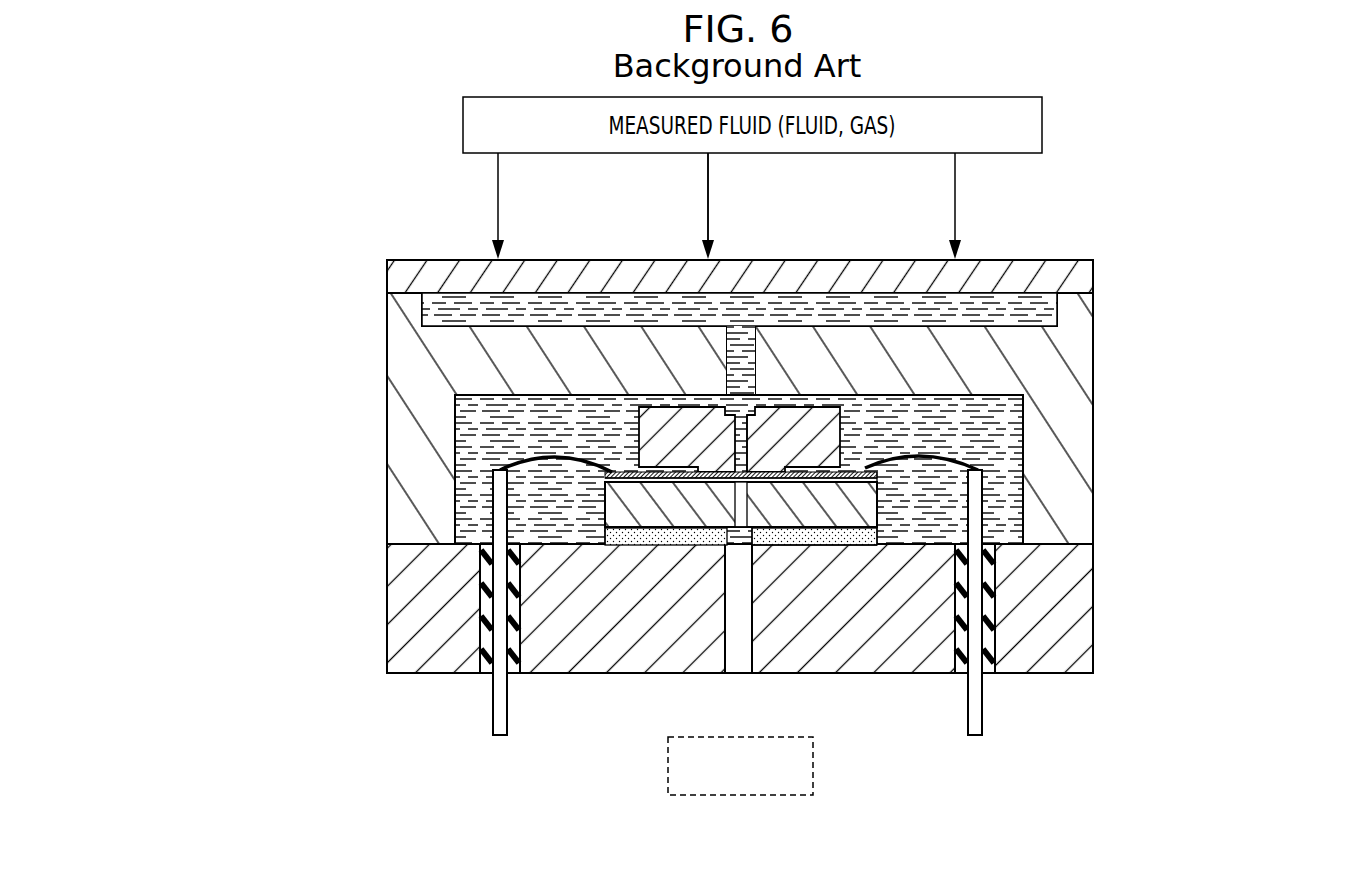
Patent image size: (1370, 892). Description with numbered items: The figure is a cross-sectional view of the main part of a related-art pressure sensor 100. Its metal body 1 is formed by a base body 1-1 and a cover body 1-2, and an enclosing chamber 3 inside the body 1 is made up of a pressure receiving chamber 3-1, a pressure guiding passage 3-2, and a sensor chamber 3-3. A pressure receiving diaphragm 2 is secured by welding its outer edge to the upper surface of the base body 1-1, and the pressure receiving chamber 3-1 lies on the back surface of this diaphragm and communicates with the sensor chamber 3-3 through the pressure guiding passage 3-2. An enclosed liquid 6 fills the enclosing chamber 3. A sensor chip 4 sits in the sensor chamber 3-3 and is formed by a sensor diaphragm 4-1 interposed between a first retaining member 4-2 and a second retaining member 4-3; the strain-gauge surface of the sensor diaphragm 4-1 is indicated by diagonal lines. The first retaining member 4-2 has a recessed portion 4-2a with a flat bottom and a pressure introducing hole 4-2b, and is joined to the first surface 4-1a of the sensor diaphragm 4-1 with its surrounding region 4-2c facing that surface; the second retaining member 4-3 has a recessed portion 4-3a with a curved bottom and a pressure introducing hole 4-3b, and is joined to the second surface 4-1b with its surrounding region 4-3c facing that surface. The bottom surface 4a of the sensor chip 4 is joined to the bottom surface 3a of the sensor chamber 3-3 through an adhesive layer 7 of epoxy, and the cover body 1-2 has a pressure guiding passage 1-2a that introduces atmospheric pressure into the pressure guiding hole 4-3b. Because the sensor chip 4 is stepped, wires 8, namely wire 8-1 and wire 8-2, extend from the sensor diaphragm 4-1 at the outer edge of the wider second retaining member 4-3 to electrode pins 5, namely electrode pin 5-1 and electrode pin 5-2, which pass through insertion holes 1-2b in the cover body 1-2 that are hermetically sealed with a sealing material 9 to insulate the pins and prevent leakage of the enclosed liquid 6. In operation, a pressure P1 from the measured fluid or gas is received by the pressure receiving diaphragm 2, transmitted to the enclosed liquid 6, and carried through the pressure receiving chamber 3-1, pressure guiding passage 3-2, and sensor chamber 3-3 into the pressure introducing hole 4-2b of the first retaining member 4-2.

The pressure sensor 100 is at (1092, 177).
The body 1 is at (291, 395).
The base body 1-1 is at (416, 400).
The cover body 1-2 is at (416, 584).
The pressure guiding passage 1-2a is at (738, 625).
The insertion holes 1-2b is at (482, 620).
The pressure receiving diaphragm 2 is at (1078, 272).
The enclosing chamber 3 is at (1215, 318).
The pressure receiving chamber 3-1 is at (1058, 304).
The pressure guiding passage 3-2 is at (758, 362).
The sensor chamber 3-3 is at (997, 416).
The bottom surface of sensor chamber 3a is at (491, 512).
The sensor chip 4 is at (1255, 430).
The sensor diaphragm 4-1 is at (870, 494).
The first surface 4-1a is at (726, 480).
The second surface 4-1b is at (724, 484).
The first retaining member 4-2 is at (840, 432).
The recessed portion 4-2a is at (775, 480).
The pressure introducing hole 4-2b is at (830, 470).
The surrounding region 4-2c is at (672, 455).
The second retaining member 4-3 is at (880, 536).
The recessed portion 4-3a is at (802, 548).
The pressure introducing hole 4-3b is at (752, 546).
The surrounding region 4-3c is at (622, 542).
The bottom surface of sensor chip 4a is at (913, 546).
The electrode pins 5 is at (750, 616).
The electrode pin 5-1 is at (502, 718).
The electrode pin 5-2 is at (975, 720).
The enclosed liquid 6 is at (478, 403).
The adhesive layer 7 is at (700, 548).
The wires 8 is at (786, 339).
The wire 8-1 is at (540, 458).
The wire 8-2 is at (888, 470).
The sealing material 9 is at (484, 655).
The pressure P1 is at (727, 197).